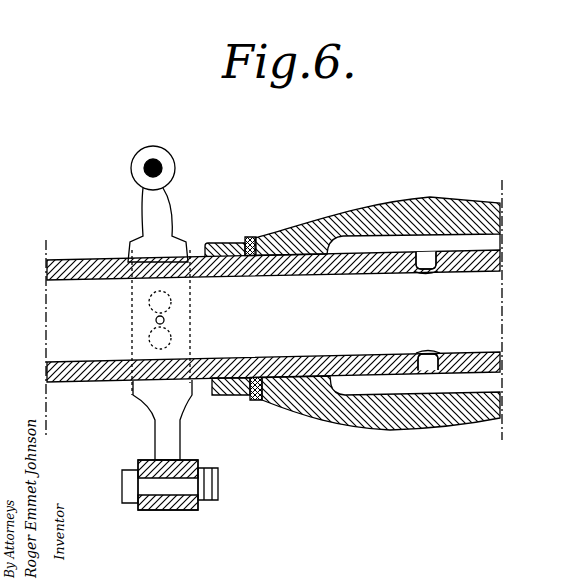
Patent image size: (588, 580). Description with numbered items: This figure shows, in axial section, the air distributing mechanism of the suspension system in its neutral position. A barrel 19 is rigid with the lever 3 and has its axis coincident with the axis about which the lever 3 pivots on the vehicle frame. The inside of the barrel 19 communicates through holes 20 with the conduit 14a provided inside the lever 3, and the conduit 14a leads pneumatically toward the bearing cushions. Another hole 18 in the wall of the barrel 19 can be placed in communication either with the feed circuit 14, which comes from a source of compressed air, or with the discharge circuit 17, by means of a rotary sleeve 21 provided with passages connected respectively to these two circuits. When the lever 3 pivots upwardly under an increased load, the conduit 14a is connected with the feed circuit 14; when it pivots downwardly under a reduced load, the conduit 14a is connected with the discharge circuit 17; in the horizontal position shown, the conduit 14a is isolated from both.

The lever 3 is at (437, 223).
The feed circuit 14 is at (121, 383).
The conduit 14a is at (485, 240).
The discharge circuit 17 is at (120, 383).
The hole 18 is at (157, 318).
The barrel 19 is at (312, 399).
The holes 20 is at (419, 258).
The rotary sleeve 21 is at (163, 428).